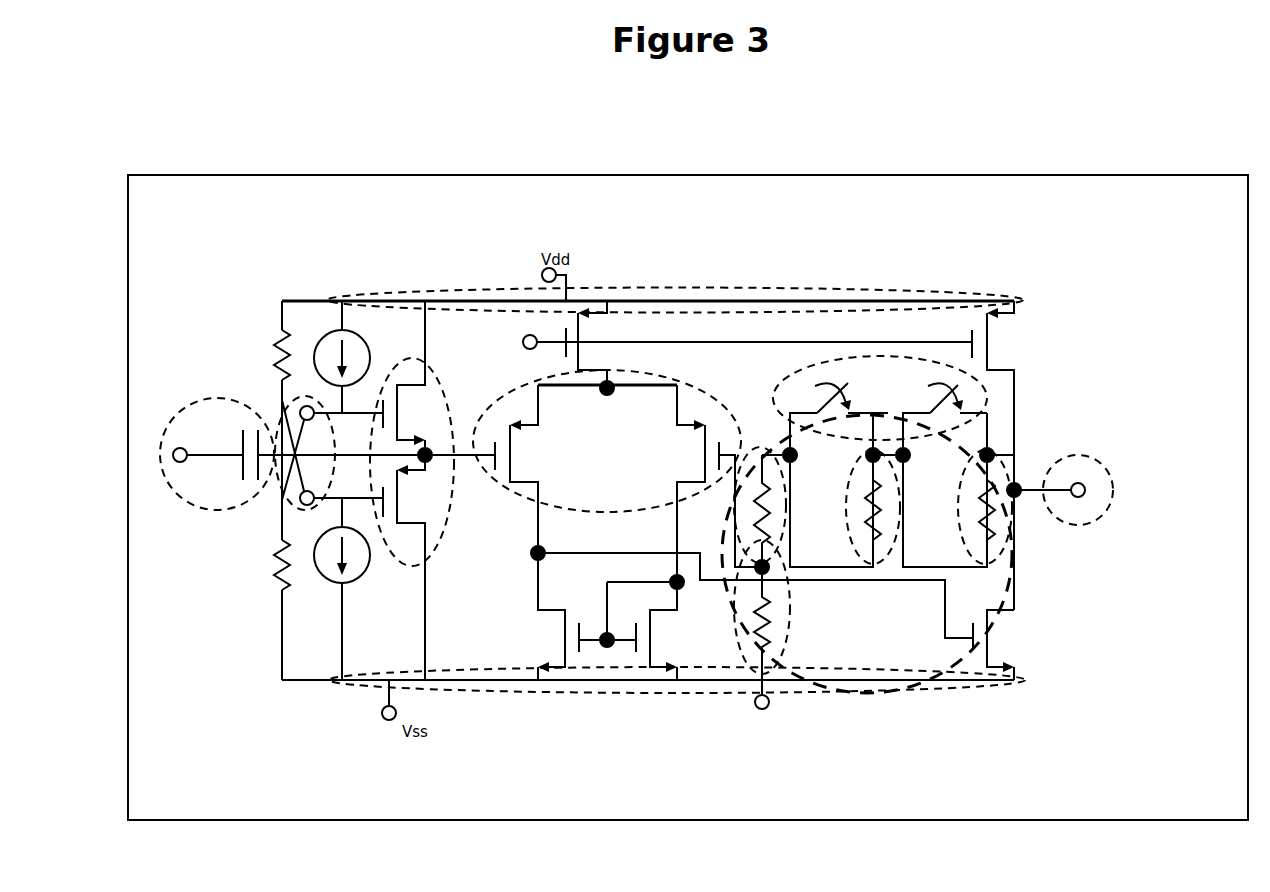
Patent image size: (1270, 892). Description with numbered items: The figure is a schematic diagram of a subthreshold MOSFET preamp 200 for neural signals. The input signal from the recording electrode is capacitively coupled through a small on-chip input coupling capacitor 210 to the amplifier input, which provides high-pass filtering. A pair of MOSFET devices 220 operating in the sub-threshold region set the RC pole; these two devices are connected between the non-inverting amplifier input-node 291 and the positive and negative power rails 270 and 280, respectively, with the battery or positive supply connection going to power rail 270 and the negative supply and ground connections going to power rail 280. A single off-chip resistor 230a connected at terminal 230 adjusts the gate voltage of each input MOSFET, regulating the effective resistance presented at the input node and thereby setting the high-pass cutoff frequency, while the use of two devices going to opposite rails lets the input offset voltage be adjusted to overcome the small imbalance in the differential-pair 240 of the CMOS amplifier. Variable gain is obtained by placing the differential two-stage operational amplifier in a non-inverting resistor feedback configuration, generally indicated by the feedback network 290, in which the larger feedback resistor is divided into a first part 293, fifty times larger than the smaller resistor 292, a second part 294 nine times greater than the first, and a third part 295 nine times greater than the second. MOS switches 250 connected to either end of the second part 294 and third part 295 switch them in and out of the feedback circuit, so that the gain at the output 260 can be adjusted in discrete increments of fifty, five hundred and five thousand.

The oscillator circuit 200 is at (407, 197).
The input coupling capacitor 210 is at (175, 495).
The pair of MOSFET devices 220 is at (411, 358).
The terminal 230 is at (285, 497).
The off-chip resistor 230a is at (292, 566).
The differential-pair 240 is at (607, 380).
The MOS switches 250 is at (873, 356).
The output 260 is at (1085, 525).
The positive power rail 270 is at (935, 288).
The negative power rail 280 is at (690, 695).
The bias network 290 is at (1002, 625).
The non-inverting amplifier input-node 291 is at (777, 578).
The smaller resistor 292 is at (737, 657).
The first part 293 is at (774, 452).
The second part 294 is at (888, 553).
The third part 295 is at (1003, 553).